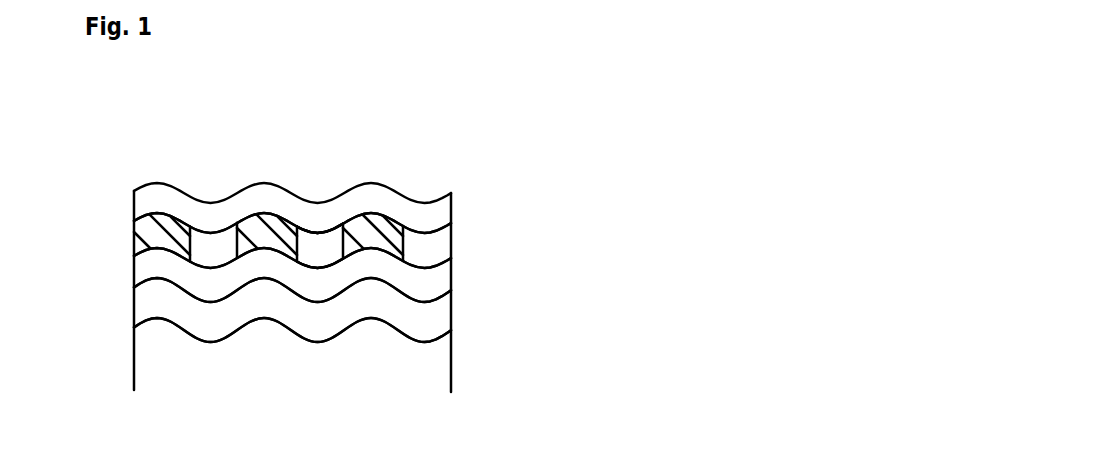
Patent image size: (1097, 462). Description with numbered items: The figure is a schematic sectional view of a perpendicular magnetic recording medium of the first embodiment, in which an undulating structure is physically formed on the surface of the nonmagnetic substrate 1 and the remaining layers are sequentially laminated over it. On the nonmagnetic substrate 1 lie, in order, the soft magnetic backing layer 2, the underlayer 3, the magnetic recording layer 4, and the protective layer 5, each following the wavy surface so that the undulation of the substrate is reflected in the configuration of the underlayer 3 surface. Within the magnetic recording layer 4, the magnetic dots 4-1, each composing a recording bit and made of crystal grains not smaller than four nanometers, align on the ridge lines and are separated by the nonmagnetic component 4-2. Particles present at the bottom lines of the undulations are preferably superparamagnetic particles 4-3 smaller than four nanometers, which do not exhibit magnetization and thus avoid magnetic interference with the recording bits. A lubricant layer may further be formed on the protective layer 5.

The nonmagnetic substrate 1 is at (451, 351).
The soft magnetic backing layer 2 is at (451, 311).
The underlayer 3 is at (451, 277).
The magnetic recording layer 4 is at (518, 192).
The magnetic dot 4-1 is at (382, 230).
The nonmagnetic component 4-2 is at (317, 247).
The superparamagnetic particles 4-3 is at (600, 174).
The protective layer 5 is at (451, 214).